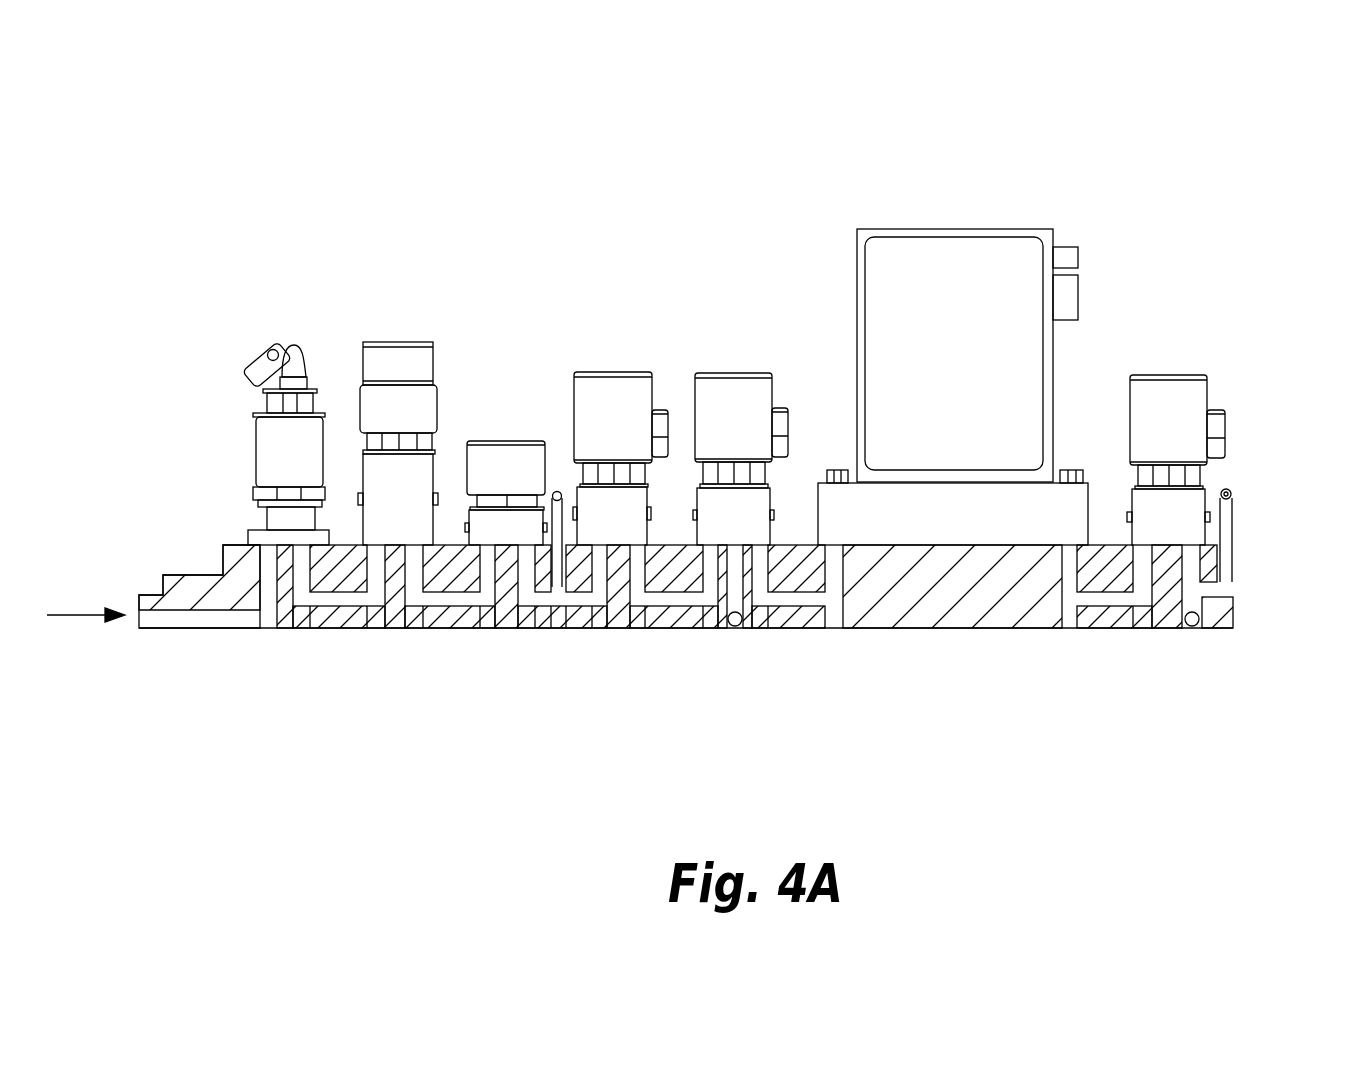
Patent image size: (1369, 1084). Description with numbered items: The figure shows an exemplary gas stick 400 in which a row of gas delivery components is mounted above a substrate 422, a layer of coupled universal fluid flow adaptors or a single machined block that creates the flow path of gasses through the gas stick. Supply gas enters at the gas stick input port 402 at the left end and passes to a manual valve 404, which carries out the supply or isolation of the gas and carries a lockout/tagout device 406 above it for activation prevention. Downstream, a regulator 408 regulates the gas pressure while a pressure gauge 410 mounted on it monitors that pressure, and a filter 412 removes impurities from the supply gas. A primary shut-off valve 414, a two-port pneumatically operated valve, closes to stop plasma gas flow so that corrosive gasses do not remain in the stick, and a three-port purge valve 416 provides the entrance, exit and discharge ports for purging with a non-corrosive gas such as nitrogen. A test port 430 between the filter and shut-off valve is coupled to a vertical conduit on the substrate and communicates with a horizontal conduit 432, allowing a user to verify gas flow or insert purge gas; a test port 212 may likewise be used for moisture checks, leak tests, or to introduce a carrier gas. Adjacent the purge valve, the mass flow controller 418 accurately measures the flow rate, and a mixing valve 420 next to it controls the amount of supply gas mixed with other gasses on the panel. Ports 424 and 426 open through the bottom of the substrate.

The gas stick 400 is at (1100, 175).
The gas stick input port 402 is at (187, 615).
The manual valve 404 is at (267, 466).
The lockout/tagout device 406 is at (291, 343).
The regulator 408 is at (376, 423).
The pressure gauge 410 is at (396, 343).
The filter 412 is at (484, 480).
The primary shut-off valve 414 is at (591, 426).
The purge valve 416 is at (711, 434).
The mass flow controller 418 is at (931, 367).
The mixing valve 420 is at (1146, 432).
The substrate 422 is at (1222, 610).
The bottom port 424 is at (730, 625).
The bottom port 426 is at (1192, 626).
The test port 430 is at (557, 490).
The horizontal conduit 432 is at (557, 583).
The test port 212 is at (1233, 492).